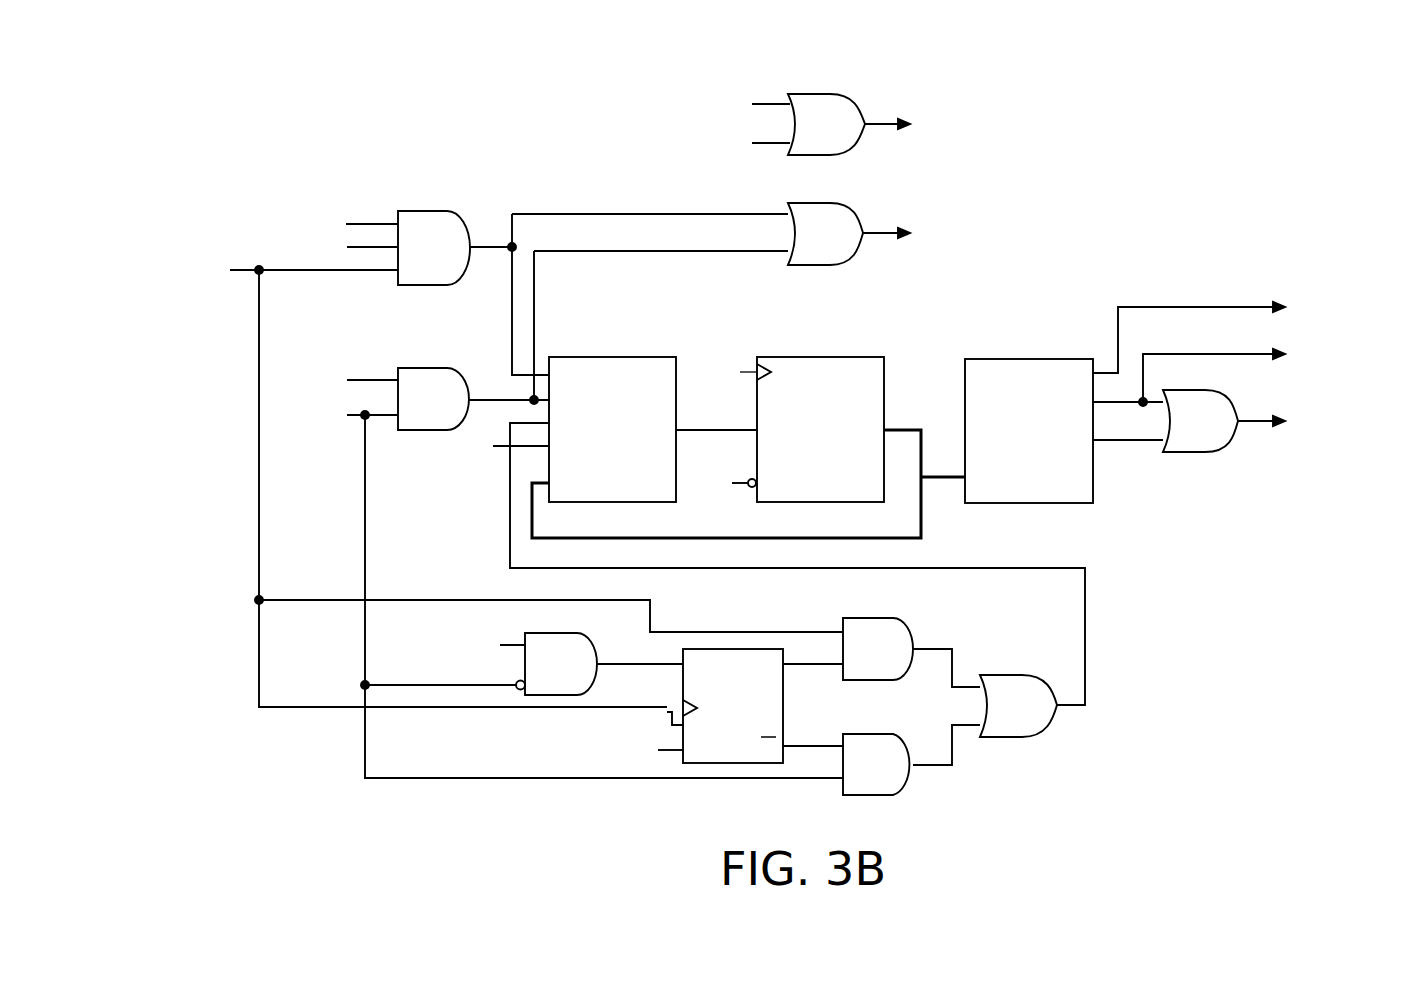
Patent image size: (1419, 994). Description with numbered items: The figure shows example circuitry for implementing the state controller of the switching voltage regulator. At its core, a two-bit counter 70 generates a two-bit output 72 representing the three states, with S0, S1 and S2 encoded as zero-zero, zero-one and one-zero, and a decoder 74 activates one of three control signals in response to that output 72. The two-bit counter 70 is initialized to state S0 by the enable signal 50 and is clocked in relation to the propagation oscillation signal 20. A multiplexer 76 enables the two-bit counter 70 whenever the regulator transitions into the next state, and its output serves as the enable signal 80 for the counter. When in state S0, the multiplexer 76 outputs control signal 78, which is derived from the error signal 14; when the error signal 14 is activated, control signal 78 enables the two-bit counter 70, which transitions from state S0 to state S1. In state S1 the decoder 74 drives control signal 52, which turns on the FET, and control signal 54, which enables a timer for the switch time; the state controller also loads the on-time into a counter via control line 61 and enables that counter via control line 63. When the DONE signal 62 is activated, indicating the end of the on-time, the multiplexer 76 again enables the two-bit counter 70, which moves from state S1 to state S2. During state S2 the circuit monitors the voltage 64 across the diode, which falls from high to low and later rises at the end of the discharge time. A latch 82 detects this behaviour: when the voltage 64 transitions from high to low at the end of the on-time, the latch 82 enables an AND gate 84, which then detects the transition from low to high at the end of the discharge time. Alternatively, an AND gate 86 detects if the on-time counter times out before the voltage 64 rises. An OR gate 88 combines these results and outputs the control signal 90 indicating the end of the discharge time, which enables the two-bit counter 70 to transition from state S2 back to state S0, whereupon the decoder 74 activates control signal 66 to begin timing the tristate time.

The error signal 14 is at (363, 222).
The propagation oscillation signal 20 is at (738, 372).
The enable signal 50 is at (745, 490).
The control signal 52 is at (1229, 352).
The control signal 54 is at (1253, 425).
The control line 61 is at (876, 231).
The DONE signal 62 is at (365, 508).
The control line 63 is at (878, 122).
The voltage across the diode 64 is at (259, 348).
The control signal 66 is at (1192, 305).
The 2-bit counter 70 is at (884, 383).
The 2-bit output 72 is at (921, 527).
The decoder 74 is at (1032, 503).
The multiplexer 76 is at (610, 502).
The control signal 78 is at (512, 318).
The enable signal 80 is at (700, 428).
The latch 82 is at (783, 703).
The AND gate 84 is at (870, 618).
The AND gate 86 is at (870, 734).
The OR gate 88 is at (1001, 673).
The control signal 90 is at (1085, 612).